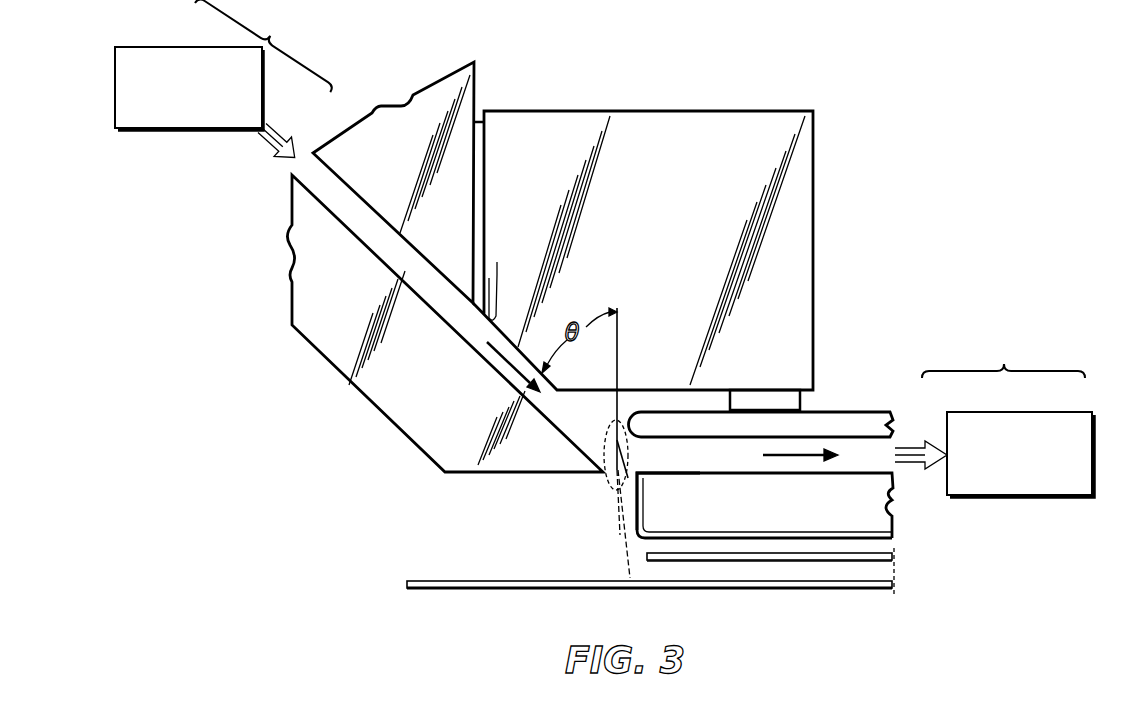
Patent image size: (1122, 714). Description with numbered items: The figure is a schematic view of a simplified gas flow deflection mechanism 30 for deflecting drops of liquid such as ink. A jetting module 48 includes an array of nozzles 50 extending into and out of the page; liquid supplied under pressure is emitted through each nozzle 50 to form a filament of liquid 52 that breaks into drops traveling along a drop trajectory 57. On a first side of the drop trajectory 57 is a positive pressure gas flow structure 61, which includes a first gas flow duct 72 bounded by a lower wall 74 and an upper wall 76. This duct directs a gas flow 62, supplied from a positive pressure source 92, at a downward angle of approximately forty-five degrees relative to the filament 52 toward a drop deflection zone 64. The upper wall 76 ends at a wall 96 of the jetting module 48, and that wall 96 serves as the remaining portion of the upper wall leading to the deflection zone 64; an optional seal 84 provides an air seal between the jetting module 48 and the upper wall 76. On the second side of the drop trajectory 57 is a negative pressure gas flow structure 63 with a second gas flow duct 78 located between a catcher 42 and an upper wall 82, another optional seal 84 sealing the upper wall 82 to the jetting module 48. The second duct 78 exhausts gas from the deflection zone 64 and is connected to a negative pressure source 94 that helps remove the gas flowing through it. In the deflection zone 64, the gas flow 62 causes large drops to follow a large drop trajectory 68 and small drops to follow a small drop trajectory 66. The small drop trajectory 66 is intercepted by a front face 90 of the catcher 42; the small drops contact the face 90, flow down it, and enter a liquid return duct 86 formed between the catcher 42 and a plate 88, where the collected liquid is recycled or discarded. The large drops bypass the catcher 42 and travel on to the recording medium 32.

The air knife / web handling system 30 is at (882, 99).
The recording medium 32 is at (866, 590).
The catcher 42 is at (896, 510).
The jetting module 48 is at (728, 111).
The nozzle 50 is at (616, 393).
The filament of liquid 52 is at (628, 427).
The drop trajectory 57 is at (614, 509).
The positive pressure gas flow structure 61 is at (266, 46).
The gas flow 62 is at (503, 362).
The negative pressure gas flow structure 63 is at (1003, 359).
The drop deflection zone 64 is at (604, 478).
The small drop trajectory 66 is at (638, 488).
The large drop trajectory 68 is at (626, 550).
The first gas flow duct 72 is at (314, 172).
The lower wall 74 is at (448, 315).
The upper wall 76 is at (356, 192).
The second gas flow duct 78 is at (878, 455).
The upper wall 82 is at (878, 412).
The seal 84 is at (478, 120).
The liquid return duct 86 is at (880, 549).
The plate 88 is at (873, 564).
The front face 90 is at (644, 495).
The positive pressure source 92 is at (195, 47).
The negative pressure source 94 is at (1002, 412).
The wall 96 is at (497, 275).